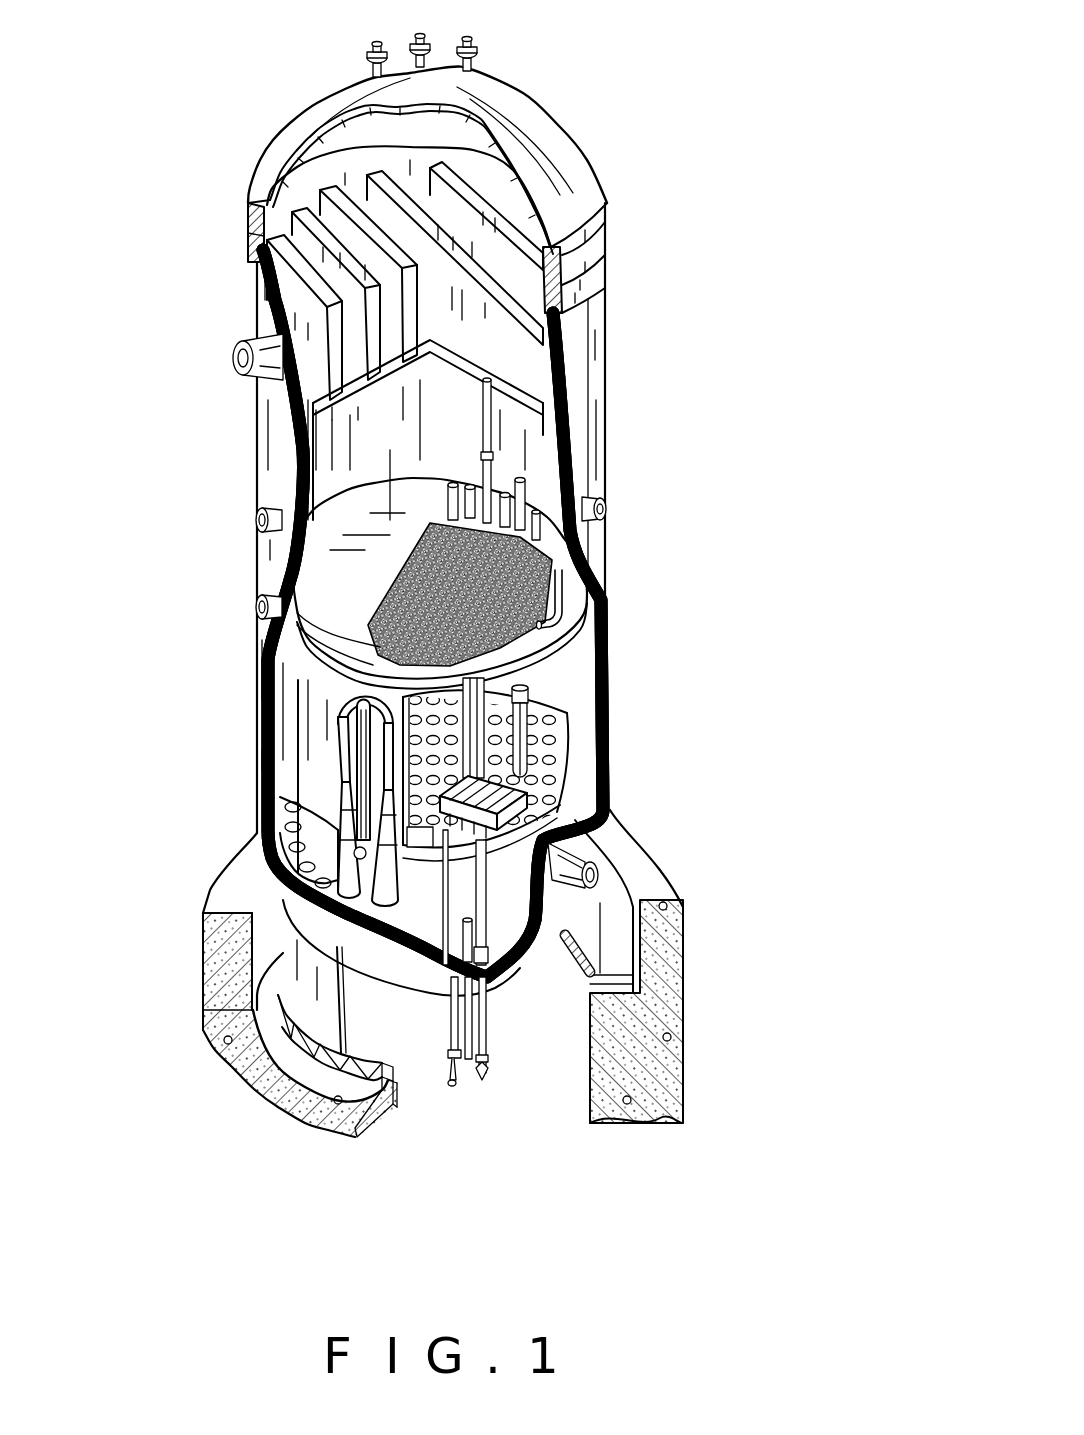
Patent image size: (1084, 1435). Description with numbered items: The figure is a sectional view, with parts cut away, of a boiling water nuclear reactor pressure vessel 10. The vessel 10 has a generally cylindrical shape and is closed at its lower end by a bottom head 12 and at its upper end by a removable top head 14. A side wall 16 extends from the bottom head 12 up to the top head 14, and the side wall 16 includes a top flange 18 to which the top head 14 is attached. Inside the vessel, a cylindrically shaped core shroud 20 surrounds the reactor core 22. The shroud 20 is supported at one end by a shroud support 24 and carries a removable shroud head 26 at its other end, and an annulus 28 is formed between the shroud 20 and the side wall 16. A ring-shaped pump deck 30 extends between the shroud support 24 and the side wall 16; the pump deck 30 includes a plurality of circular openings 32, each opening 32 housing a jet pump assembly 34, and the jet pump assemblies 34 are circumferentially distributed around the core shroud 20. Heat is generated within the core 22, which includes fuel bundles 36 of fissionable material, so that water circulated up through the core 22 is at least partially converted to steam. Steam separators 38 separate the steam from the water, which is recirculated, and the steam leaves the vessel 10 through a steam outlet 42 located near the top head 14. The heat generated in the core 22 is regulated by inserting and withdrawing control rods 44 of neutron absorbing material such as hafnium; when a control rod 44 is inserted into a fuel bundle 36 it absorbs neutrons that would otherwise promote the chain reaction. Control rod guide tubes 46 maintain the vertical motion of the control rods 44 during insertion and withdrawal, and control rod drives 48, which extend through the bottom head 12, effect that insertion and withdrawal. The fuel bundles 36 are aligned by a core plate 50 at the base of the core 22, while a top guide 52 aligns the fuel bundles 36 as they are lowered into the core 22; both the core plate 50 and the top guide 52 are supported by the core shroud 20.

The reactor pressure vessel 10 is at (645, 100).
The bottom head 12 is at (533, 973).
The top head 14 is at (522, 90).
The side wall 16 is at (263, 803).
The top flange 18 is at (580, 267).
The core shroud 20 is at (307, 660).
The reactor core 22 is at (575, 652).
The shroud support 24 is at (281, 826).
The shroud head 26 is at (383, 487).
The annulus 28 is at (290, 722).
The pump deck 30 is at (290, 832).
The circular openings 32 is at (300, 860).
The jet pump assembly 34 is at (338, 742).
The fuel bundles 36 is at (545, 714).
The steam separators 38 is at (492, 425).
The steam outlet 42 is at (240, 362).
The control rods 44 is at (530, 685).
The control rod guide tubes 46 is at (613, 815).
The control rod drives 48 is at (490, 1040).
The core plate 50 is at (570, 750).
The top guide 52 is at (565, 618).